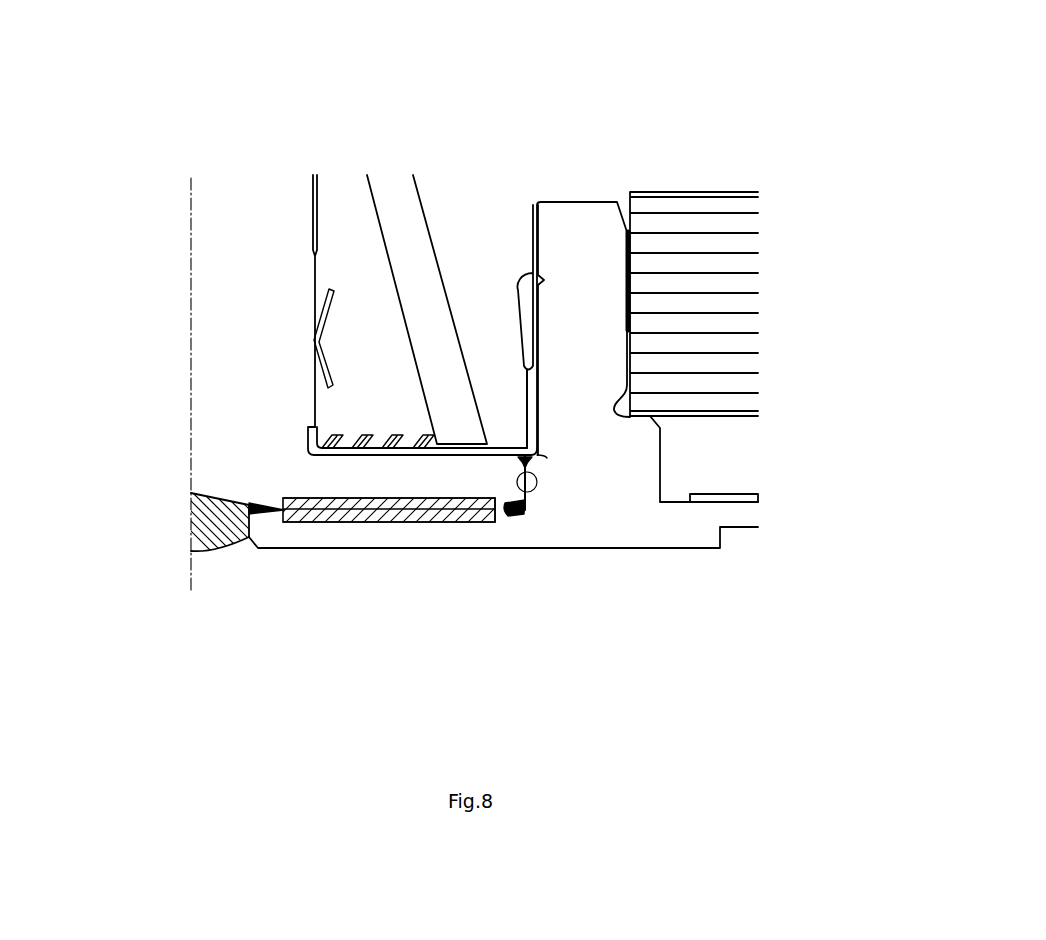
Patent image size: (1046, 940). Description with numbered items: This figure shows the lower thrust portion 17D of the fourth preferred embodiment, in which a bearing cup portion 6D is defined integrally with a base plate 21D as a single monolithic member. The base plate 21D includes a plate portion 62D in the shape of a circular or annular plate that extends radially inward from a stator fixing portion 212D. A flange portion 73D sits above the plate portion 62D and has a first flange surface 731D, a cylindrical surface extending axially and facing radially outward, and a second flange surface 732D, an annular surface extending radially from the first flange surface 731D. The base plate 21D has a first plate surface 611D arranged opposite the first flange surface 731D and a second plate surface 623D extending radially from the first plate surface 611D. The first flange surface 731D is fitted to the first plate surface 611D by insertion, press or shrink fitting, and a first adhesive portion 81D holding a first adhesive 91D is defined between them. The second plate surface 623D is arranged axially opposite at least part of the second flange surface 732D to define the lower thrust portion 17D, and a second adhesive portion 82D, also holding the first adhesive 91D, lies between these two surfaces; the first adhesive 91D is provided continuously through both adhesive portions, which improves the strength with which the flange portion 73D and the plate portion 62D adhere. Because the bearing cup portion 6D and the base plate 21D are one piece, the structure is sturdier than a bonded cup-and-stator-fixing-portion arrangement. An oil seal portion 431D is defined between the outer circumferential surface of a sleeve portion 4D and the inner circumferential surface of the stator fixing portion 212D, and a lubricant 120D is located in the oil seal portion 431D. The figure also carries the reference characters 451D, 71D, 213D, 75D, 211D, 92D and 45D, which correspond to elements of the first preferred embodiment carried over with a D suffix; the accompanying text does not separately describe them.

The lubricant 120D is at (528, 385).
The contact section 451D is at (408, 450).
The oil seal portion 431D is at (528, 327).
The base plate 21D is at (858, 148).
The stator fixing portion 212D is at (588, 302).
The shell 71D is at (290, 222).
The first adhesive 91D is at (533, 460).
The sleeve portion 4D is at (367, 307).
The second flange surface 732D is at (390, 498).
The housing step 213D is at (630, 457).
The second adhesive portion 82D is at (305, 498).
The side wall 75D is at (220, 497).
The first adhesive portion 81D is at (530, 482).
The housing base 211D is at (700, 518).
The bottom portion 92D is at (210, 537).
The first plate surface 611D is at (530, 484).
The bottom flange 45D is at (368, 452).
The second plate surface 623D is at (388, 522).
The bearing cup portion 6D is at (781, 637).
The flange portion 73D is at (421, 483).
The plate portion 62D is at (437, 528).
The first flange surface 731D is at (498, 504).
The lower thrust portion 17D is at (363, 703).